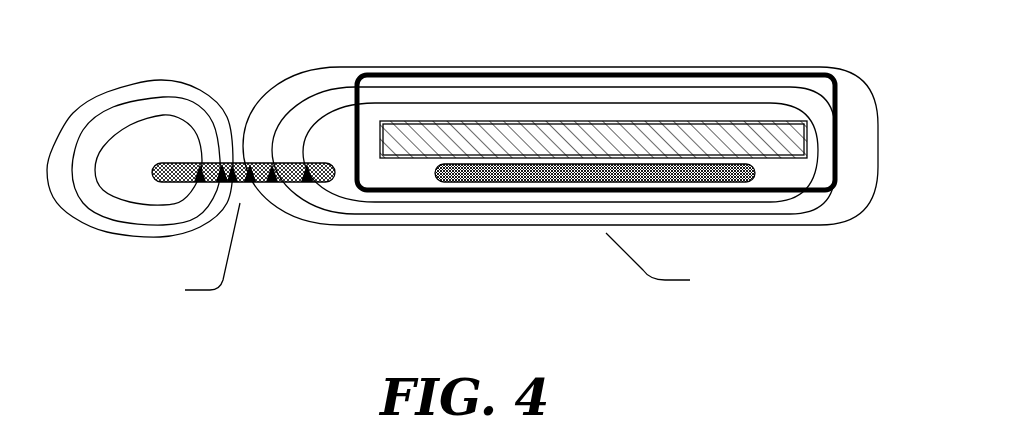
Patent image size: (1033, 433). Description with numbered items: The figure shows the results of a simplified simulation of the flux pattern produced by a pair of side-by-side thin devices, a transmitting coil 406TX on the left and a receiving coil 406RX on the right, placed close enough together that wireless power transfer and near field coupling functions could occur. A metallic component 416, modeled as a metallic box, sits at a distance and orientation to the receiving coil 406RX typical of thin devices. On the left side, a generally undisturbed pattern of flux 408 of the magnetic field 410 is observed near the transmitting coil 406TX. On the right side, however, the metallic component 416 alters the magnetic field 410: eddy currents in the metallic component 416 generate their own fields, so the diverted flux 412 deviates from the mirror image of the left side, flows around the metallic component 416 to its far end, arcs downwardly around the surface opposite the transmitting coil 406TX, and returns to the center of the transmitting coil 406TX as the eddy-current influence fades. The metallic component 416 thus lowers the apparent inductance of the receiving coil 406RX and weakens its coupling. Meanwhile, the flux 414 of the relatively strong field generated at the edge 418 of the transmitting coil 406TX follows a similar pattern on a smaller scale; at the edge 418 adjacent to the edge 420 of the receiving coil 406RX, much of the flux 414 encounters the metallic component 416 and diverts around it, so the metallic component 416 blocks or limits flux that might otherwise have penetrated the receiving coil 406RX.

The transmitting coil 406TX is at (181, 245).
The receiving coil 406RX is at (676, 257).
The flux 408 is at (138, 68).
The magnetic field 410 is at (168, 156).
The diverted flux 412 is at (669, 60).
The flux 414 is at (321, 106).
The metallic component 416 is at (520, 121).
The edge of the transmitting coil 418 is at (335, 186).
The edge of the receiving coil 420 is at (440, 181).